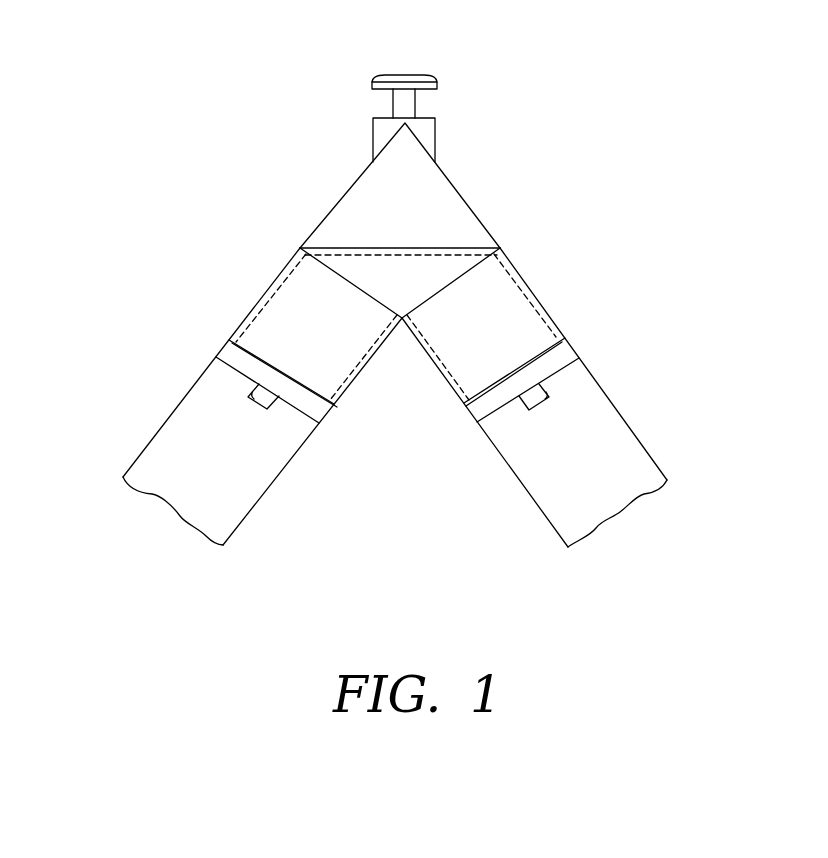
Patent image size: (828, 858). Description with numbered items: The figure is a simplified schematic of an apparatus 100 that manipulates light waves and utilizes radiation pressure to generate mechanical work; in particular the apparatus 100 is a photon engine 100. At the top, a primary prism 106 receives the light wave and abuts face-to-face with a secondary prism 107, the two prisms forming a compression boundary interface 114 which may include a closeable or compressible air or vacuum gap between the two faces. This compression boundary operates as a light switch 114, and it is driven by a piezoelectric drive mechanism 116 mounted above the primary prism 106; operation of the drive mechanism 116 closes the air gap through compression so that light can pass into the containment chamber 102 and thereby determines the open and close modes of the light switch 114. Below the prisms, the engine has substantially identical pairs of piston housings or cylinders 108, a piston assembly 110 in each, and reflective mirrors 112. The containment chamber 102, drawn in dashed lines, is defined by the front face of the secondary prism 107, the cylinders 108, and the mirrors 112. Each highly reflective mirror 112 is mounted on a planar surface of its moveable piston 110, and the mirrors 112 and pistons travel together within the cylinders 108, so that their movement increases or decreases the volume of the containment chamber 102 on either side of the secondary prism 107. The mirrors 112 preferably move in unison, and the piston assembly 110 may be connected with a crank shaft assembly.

The photon engine 100 is at (117, 172).
The containment chamber 102 is at (520, 280).
The primary prism 106 is at (443, 195).
The secondary prism 107 is at (427, 262).
The piston housing or cylinder 108 is at (257, 465).
The piston assembly 110 is at (313, 410).
The reflective mirror 112 is at (292, 368).
The compression boundary interface / light switch 114 is at (377, 247).
The piezoelectric drive mechanism 116 is at (425, 74).